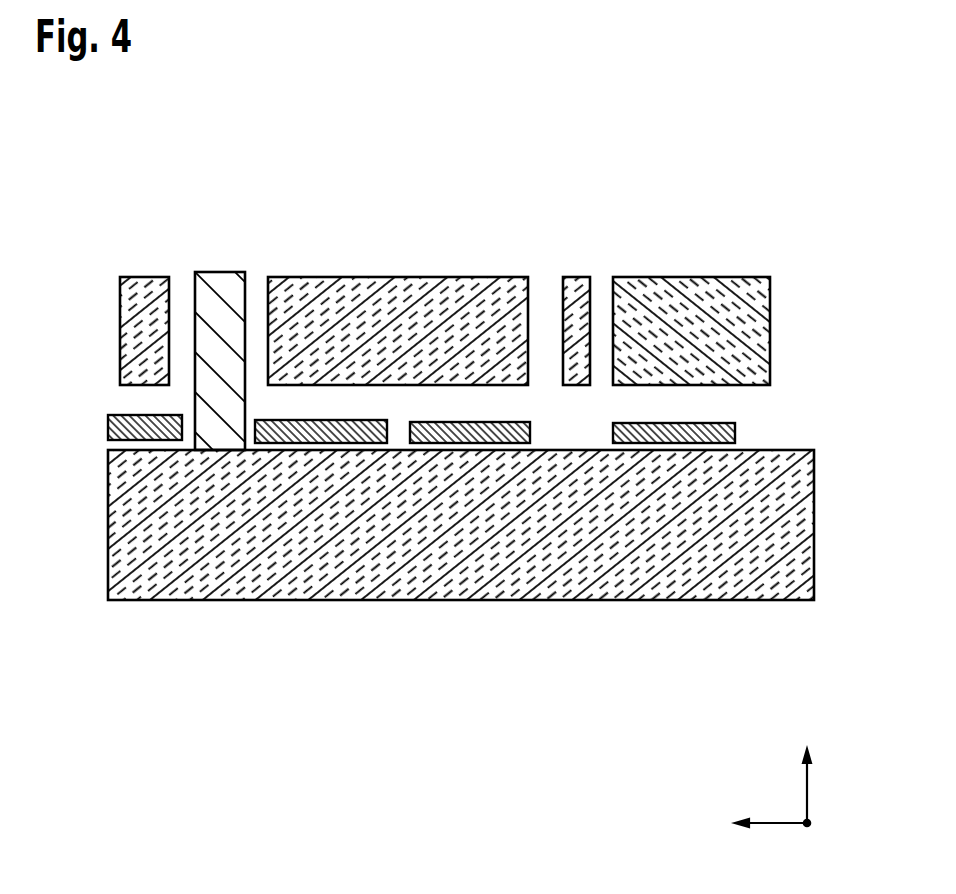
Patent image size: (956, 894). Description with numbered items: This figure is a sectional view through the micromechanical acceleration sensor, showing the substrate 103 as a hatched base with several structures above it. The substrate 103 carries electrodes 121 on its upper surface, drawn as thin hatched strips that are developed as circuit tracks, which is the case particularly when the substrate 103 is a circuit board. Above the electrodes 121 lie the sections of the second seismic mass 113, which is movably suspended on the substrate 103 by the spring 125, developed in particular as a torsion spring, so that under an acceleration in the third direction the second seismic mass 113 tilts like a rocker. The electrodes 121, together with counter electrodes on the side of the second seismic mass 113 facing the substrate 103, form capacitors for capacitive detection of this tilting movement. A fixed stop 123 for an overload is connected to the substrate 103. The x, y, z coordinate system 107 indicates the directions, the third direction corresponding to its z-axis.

The substrate 103 is at (282, 553).
The x, y, z coordinate system 107 is at (764, 762).
The second seismic mass 113 is at (140, 290).
The electrodes 121 is at (108, 423).
The fixed stops 123 is at (222, 290).
The spring 125 is at (573, 290).